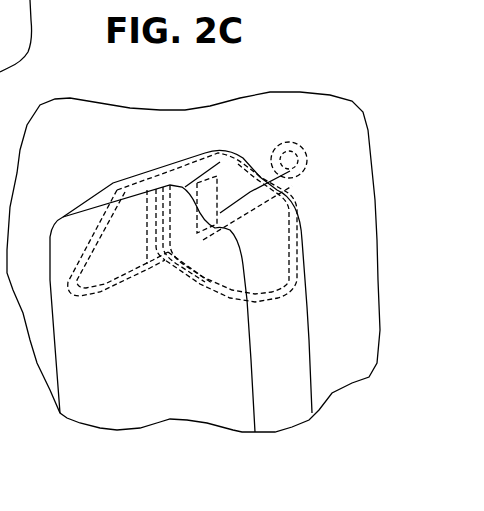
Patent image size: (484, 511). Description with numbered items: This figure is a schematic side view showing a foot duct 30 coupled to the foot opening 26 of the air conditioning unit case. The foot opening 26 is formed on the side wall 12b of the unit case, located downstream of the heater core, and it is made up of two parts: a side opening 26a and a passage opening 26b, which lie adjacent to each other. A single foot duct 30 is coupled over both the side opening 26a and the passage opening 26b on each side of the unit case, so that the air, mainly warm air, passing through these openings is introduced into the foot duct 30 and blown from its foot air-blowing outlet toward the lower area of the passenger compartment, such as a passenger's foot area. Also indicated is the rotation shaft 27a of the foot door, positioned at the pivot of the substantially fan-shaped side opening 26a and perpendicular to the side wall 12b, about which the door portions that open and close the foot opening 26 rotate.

The side wall 12b is at (265, 117).
The foot opening 26 is at (146, 175).
The side opening 26a is at (303, 240).
The passage opening 26b is at (82, 232).
The rotation shaft 27a is at (292, 147).
The foot duct 30 is at (272, 348).